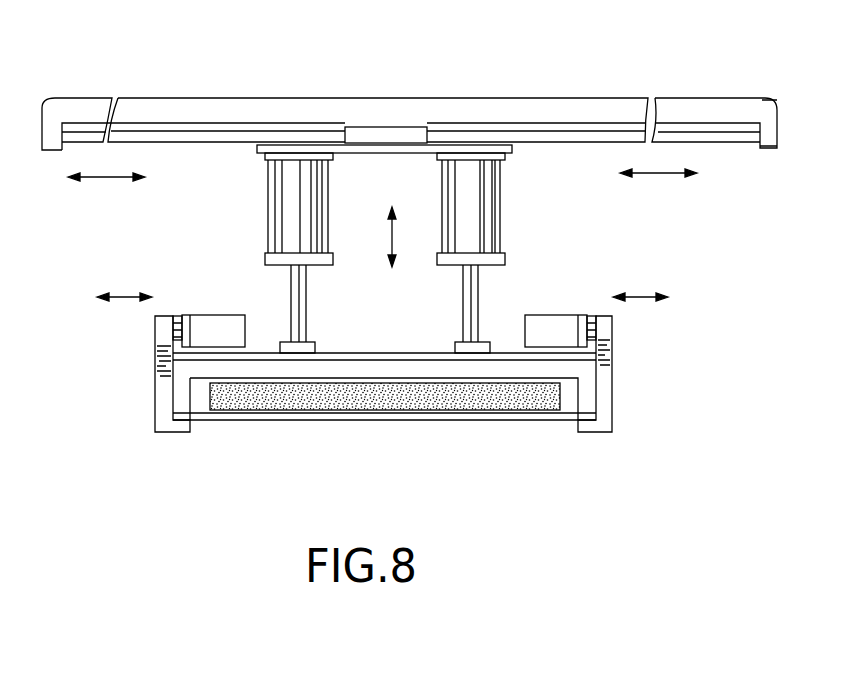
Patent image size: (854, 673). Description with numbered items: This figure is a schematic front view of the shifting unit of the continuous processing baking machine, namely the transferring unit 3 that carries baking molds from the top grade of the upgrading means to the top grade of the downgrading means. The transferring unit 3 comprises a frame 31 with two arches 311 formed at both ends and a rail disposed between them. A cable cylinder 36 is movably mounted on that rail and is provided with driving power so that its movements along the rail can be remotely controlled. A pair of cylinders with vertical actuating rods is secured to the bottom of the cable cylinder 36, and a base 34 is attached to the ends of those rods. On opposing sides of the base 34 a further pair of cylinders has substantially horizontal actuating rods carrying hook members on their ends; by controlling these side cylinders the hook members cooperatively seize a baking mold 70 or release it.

The transferring unit 3 is at (303, 98).
The frame 31 is at (531, 105).
The arches 311 is at (770, 130).
The cable cylinder 36 is at (383, 130).
The base 34 is at (375, 353).
The baking mold 70 is at (433, 422).